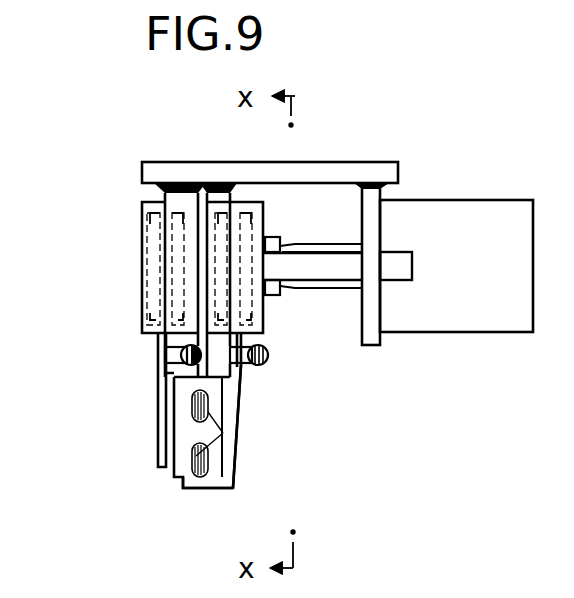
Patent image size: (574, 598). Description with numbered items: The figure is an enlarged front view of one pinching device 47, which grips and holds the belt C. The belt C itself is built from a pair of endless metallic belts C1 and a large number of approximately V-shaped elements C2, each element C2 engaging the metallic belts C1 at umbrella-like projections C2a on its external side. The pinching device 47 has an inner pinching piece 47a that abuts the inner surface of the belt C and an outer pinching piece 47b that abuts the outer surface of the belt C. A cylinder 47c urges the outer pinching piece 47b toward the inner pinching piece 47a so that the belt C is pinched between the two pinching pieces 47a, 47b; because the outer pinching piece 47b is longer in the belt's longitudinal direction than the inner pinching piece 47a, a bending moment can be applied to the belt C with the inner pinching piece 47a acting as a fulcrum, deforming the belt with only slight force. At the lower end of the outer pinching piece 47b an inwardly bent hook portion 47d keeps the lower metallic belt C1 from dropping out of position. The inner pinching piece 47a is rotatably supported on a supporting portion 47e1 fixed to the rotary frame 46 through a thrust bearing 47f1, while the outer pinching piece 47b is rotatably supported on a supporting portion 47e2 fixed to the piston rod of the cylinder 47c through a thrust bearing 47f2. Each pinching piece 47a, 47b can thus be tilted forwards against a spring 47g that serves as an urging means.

The rotary frame 46 is at (185, 163).
The pinching device 47 is at (245, 413).
The inner pinching piece 47a is at (158, 424).
The outer pinching piece 47b is at (238, 444).
The cylinder 47c is at (465, 303).
The hook portion 47d is at (212, 490).
The supporting portion 47e1 is at (143, 325).
The supporting portion 47e2 is at (242, 372).
The thrust bearing 47f1 is at (144, 262).
The thrust bearing 47f2 is at (261, 227).
The spring 47g is at (166, 366).
The belt C is at (215, 457).
The metallic belt C1 is at (194, 461).
The element C2 is at (223, 433).
The umbrella-like projection C2a is at (192, 422).